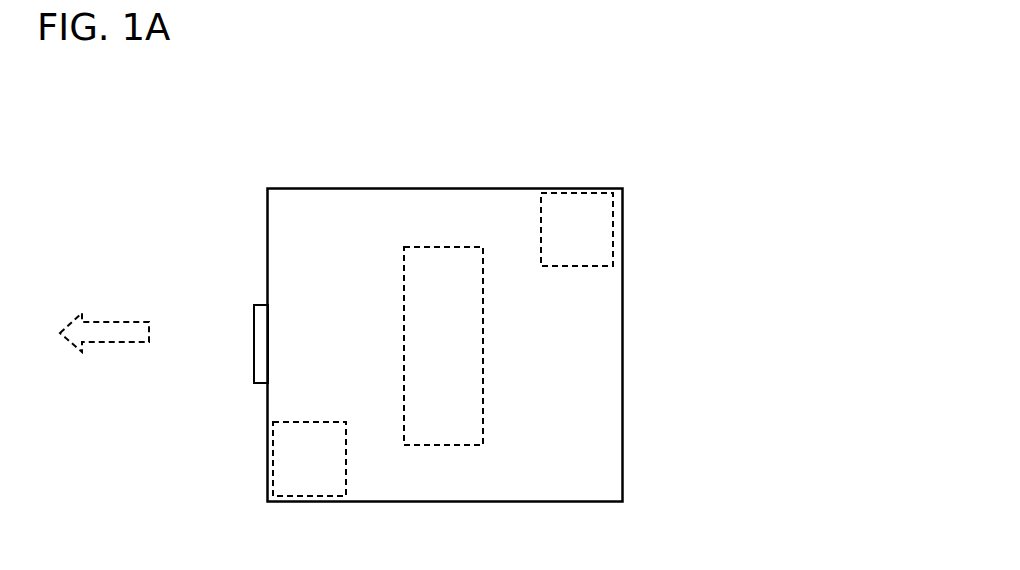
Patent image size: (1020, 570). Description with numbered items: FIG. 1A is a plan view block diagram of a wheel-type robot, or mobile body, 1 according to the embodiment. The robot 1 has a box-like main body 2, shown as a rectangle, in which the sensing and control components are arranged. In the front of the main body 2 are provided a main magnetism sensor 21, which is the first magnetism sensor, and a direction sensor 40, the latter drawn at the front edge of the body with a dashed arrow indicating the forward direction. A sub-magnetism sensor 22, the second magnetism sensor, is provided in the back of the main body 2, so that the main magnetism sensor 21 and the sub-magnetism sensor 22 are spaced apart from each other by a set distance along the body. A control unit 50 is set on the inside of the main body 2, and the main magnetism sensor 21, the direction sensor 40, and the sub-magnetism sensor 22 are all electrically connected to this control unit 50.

The robot 1 is at (188, 168).
The main body 2 is at (622, 374).
The main magnetism sensor 21 is at (272, 459).
The sub-magnetism sensor 22 is at (611, 225).
The direction sensor 40 is at (253, 347).
The control unit 50 is at (483, 393).